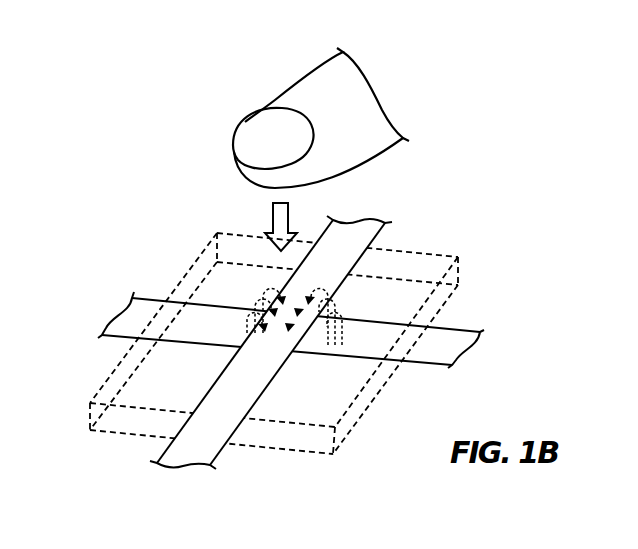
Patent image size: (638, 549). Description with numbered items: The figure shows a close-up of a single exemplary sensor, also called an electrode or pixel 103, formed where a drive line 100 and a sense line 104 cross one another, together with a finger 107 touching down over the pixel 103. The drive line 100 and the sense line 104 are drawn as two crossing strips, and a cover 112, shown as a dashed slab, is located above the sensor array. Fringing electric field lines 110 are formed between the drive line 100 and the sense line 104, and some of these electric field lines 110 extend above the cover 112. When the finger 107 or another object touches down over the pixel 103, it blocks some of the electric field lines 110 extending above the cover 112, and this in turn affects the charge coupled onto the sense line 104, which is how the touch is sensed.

The drive line 100 is at (458, 328).
The pixel 103 is at (140, 166).
The sense line 104 is at (232, 428).
The finger 107 is at (245, 122).
The electric field lines 110 is at (262, 303).
The cover 112 is at (418, 252).